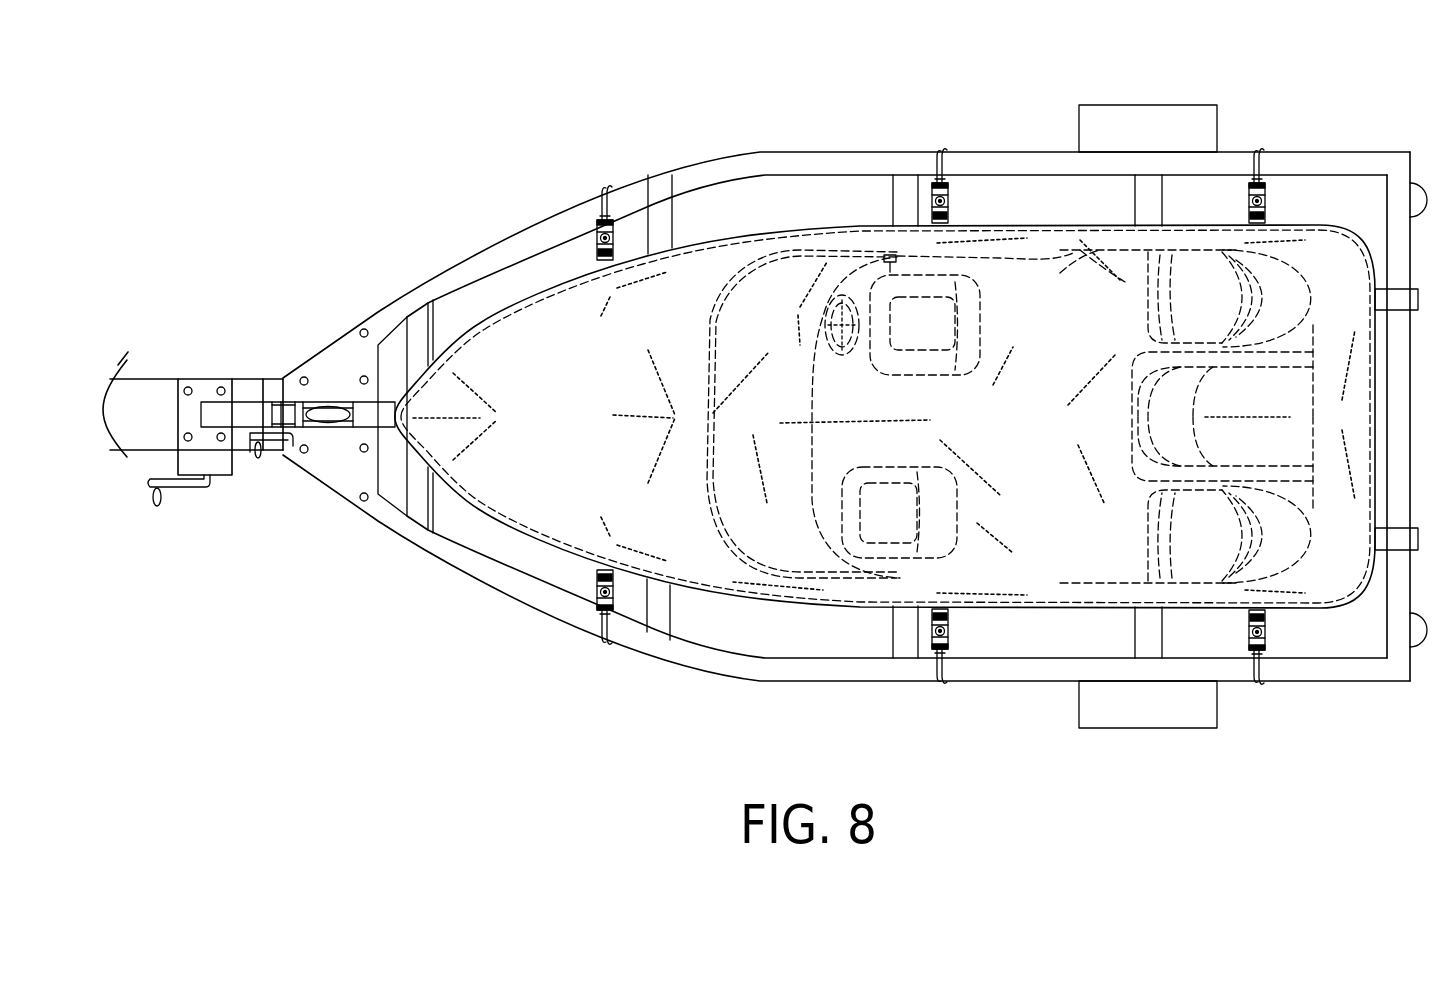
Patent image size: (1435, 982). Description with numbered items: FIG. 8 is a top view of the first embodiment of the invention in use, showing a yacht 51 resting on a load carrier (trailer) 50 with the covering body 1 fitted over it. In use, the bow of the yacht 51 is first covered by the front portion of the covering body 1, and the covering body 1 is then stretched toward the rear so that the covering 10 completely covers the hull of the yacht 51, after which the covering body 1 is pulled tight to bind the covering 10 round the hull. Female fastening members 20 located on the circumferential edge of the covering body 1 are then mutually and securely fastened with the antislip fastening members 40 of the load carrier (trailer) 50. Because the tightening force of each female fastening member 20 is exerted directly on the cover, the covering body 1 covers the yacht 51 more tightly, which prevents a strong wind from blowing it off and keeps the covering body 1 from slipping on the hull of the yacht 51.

The covering body 1 is at (998, 224).
The covering 10 is at (547, 312).
The female fastening member 20 is at (597, 582).
The antislip fastening member 40 is at (593, 597).
The load carrier (trailer) 50 is at (477, 257).
The yacht 51 is at (762, 262).